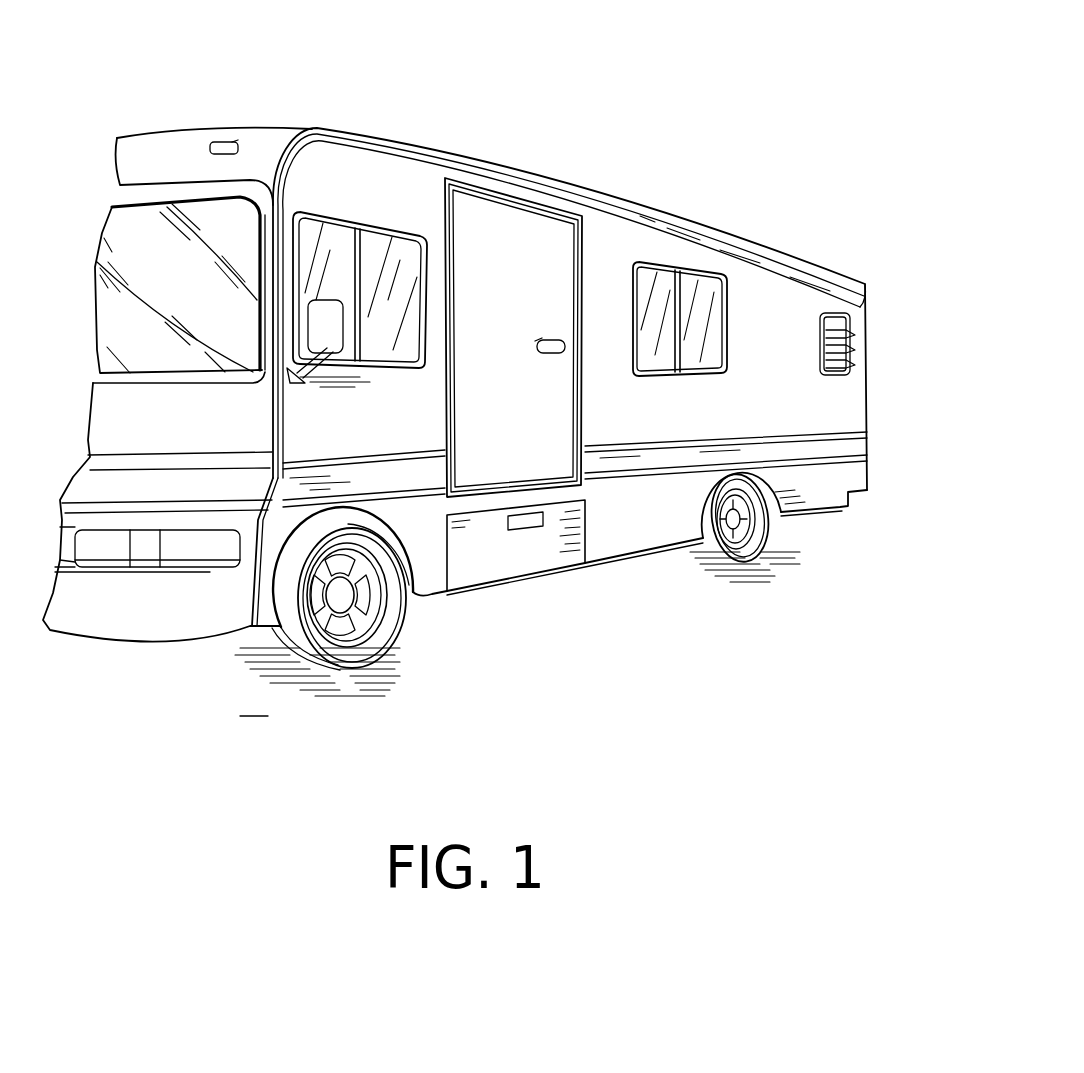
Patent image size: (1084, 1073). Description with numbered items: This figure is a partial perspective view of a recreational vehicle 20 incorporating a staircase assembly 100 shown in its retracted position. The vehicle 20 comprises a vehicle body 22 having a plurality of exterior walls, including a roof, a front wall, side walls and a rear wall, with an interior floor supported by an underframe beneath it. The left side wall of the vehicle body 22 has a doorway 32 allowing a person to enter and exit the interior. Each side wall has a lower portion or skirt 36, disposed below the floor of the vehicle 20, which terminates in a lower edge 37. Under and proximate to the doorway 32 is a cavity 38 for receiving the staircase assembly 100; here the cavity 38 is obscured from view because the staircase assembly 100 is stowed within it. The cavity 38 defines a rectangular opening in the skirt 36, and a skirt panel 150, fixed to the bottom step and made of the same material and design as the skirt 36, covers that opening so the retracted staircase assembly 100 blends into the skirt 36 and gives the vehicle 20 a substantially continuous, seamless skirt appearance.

The vehicle 20 is at (203, 100).
The vehicle body 22 is at (790, 413).
The doorway 32 is at (508, 225).
The skirt 36 is at (643, 524).
The lower edge 37 is at (827, 510).
The cavity 38 is at (447, 567).
The staircase assembly 100 is at (519, 555).
The skirt panel 150 is at (561, 551).